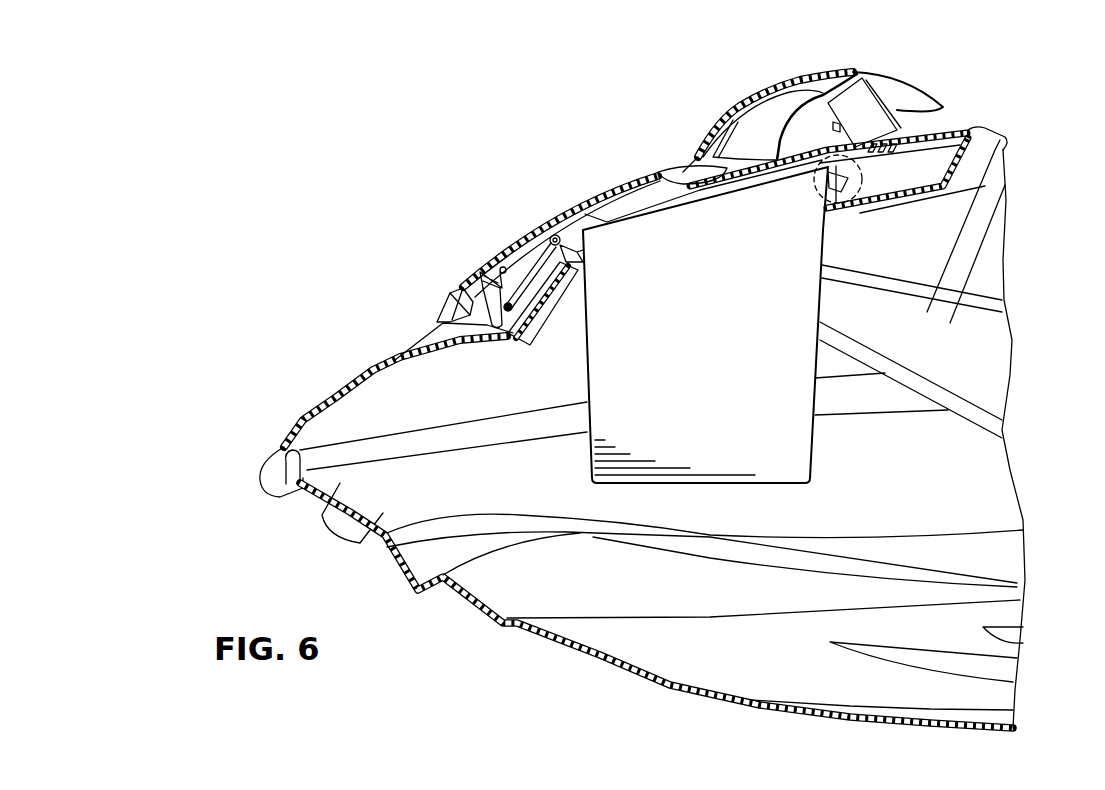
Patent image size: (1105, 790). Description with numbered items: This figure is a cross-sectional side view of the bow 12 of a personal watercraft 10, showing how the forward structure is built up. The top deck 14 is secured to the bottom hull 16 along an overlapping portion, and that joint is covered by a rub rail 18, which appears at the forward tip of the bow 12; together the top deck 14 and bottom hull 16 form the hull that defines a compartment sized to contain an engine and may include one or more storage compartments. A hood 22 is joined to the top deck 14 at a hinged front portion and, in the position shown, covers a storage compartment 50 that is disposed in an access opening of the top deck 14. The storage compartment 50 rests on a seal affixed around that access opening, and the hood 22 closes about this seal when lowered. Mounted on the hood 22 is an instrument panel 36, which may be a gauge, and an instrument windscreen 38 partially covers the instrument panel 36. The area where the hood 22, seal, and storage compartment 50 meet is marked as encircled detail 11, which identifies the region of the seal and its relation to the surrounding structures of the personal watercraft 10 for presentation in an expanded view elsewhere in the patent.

The personal watercraft 10 is at (523, 168).
The encircled detail 11 is at (820, 188).
The bow 12 is at (397, 320).
The top deck 14 is at (303, 406).
The bottom hull 16 is at (586, 660).
The rub rail 18 is at (258, 481).
The hood 22 is at (512, 247).
The instrument panel 36 is at (863, 117).
The instrument windscreen 38 is at (770, 92).
The storage compartment 50 is at (623, 382).